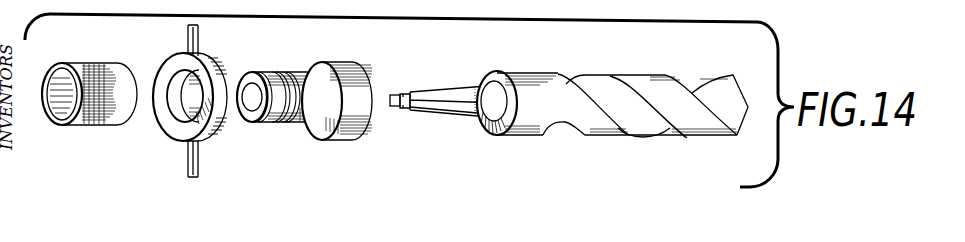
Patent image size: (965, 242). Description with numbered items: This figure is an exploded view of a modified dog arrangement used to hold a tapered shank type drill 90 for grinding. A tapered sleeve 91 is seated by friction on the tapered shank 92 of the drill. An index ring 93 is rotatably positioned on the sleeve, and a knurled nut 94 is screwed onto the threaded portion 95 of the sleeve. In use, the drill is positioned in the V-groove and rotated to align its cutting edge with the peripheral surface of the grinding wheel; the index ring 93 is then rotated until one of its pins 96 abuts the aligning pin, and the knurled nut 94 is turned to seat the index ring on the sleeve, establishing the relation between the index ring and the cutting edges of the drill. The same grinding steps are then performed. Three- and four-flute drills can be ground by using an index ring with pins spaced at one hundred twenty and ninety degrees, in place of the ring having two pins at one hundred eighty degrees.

The tapered shank type drill 90 is at (538, 73).
The tapered sleeve 91 is at (351, 67).
The tapered shank 92 is at (448, 92).
The index ring 93 is at (217, 73).
The knurled nut 94 is at (118, 117).
The threaded portion 95 is at (268, 75).
The pins 96 is at (198, 43).